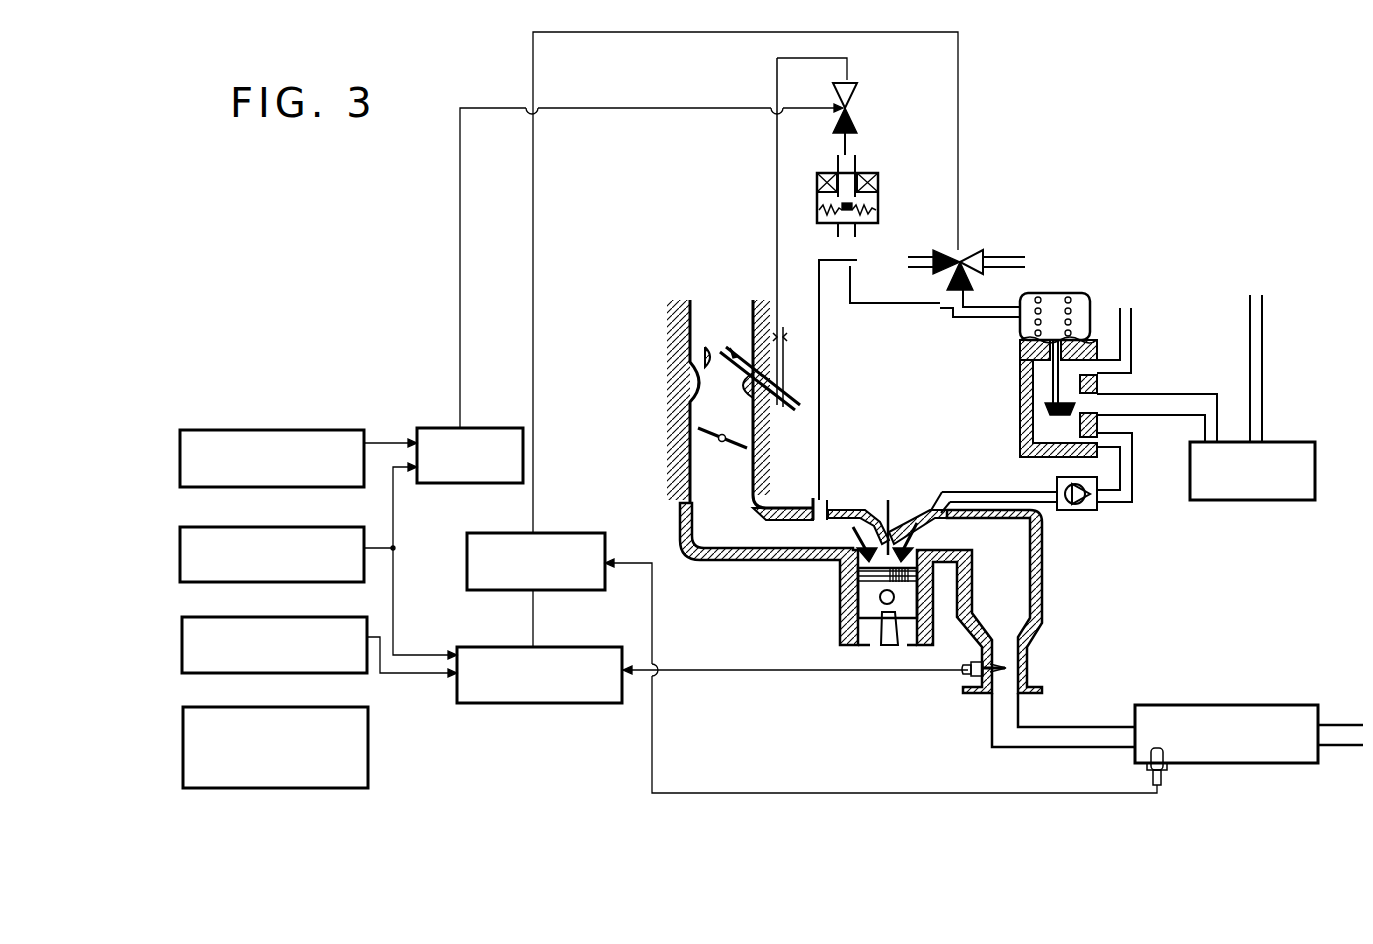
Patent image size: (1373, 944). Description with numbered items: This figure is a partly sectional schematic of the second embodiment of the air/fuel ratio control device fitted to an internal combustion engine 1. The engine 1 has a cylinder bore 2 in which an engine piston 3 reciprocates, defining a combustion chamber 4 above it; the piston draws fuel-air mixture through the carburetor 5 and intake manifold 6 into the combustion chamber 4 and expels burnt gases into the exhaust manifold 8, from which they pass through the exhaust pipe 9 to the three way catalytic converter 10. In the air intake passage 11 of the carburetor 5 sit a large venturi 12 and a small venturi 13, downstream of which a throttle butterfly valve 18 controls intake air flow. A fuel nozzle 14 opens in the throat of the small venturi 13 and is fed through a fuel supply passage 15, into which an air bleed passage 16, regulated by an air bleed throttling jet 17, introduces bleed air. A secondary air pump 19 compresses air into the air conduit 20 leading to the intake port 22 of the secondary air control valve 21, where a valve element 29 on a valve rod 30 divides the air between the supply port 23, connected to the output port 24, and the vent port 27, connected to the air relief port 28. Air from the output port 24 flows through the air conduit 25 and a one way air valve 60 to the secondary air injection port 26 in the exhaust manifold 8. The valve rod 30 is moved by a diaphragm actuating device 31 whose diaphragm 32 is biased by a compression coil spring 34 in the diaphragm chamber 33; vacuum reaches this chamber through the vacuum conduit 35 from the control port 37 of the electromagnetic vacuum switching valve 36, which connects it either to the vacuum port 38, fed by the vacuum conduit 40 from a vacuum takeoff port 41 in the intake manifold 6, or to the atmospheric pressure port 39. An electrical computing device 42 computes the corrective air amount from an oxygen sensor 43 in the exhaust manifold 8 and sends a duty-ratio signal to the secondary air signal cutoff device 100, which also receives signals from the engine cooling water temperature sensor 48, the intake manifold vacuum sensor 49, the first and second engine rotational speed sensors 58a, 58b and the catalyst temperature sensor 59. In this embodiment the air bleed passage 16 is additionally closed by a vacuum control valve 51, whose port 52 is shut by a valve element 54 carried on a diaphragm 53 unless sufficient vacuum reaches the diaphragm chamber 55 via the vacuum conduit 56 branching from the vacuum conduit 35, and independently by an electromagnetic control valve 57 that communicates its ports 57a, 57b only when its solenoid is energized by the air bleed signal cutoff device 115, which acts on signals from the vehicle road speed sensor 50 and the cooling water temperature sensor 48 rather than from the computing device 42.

The internal combustion engine 1 is at (830, 634).
The cylinder bore 2 is at (856, 590).
The engine piston 3 is at (866, 604).
The combustion chamber 4 is at (887, 516).
The carburetor 5 is at (660, 367).
The intake manifold 6 is at (723, 563).
The exhaust manifold 8 is at (1043, 545).
The exhaust pipe 9 is at (1078, 727).
The three way catalytic converter 10 is at (1234, 705).
The air intake passage 11 is at (750, 430).
The large venturi 12 is at (693, 383).
The small venturi 13 is at (703, 351).
The fuel nozzle 14 is at (726, 345).
The fuel supply passage 15 is at (744, 400).
The air bleed passage 16 is at (784, 365).
The air bleed throttling jet 17 is at (784, 327).
The throttle butterfly valve 18 is at (745, 450).
The secondary air pump 19 is at (1316, 462).
The air conduit 20 is at (1188, 394).
The secondary air control valve 21 is at (1010, 430).
The intake port 22 is at (1095, 405).
The supply port 23 is at (1022, 452).
The output port 24 is at (1080, 462).
The air conduit 25 is at (1131, 500).
The secondary air injection port 26 is at (946, 491).
The vent port 27 is at (1100, 383).
The air relief port 28 is at (1125, 355).
The valve element 29 is at (1045, 408).
The valve rod 30 is at (1022, 345).
The diaphragm actuating device 31 is at (1043, 290).
The diaphragm 32 is at (1085, 340).
The diaphragm chamber 33 is at (1056, 300).
The compression coil spring 34 is at (1078, 302).
The vacuum conduit 35 is at (975, 318).
The electromagnetic vacuum switching valve 36 is at (968, 242).
The control port 37 is at (948, 294).
The vacuum port 38 is at (916, 255).
The atmospheric pressure port 39 is at (1003, 255).
The vacuum conduit 40 is at (821, 452).
The vacuum takeoff port 41 is at (830, 508).
The electrical computing device 42 is at (586, 647).
The oxygen sensor 43 is at (965, 680).
The engine cooling water temperature sensor 48 is at (279, 527).
The intake manifold vacuum sensor 49 is at (277, 617).
The vehicle road speed sensor 50 is at (276, 430).
The vacuum control valve 51 is at (886, 186).
The port 52 is at (851, 168).
The diaphragm 53 is at (873, 210).
The valve element 54 is at (852, 226).
The diaphragm chamber 55 is at (823, 228).
The vacuum conduit 56 is at (818, 260).
The electromagnetic control valve 57 is at (857, 108).
The port 57a is at (850, 134).
The port 57b is at (850, 78).
The first engine rotational speed sensor 58a is at (237, 707).
The second engine rotational speed sensor 58b is at (457, 692).
The catalyst temperature sensor 59 is at (1165, 752).
The one way air valve 60 is at (1083, 512).
The secondary air signal cutoff device 100 is at (584, 533).
The air bleed signal cutoff device 115 is at (494, 428).